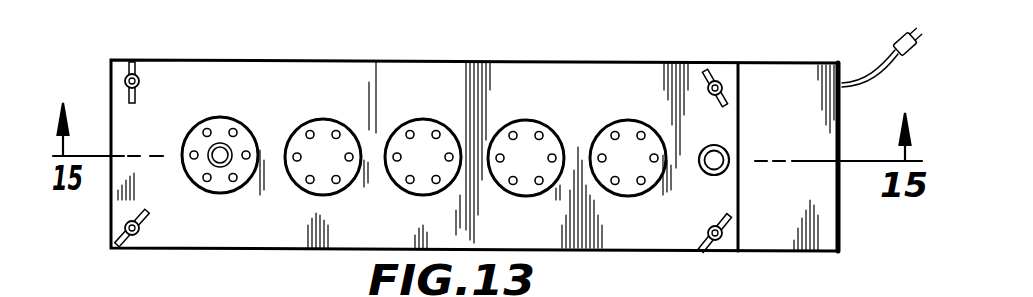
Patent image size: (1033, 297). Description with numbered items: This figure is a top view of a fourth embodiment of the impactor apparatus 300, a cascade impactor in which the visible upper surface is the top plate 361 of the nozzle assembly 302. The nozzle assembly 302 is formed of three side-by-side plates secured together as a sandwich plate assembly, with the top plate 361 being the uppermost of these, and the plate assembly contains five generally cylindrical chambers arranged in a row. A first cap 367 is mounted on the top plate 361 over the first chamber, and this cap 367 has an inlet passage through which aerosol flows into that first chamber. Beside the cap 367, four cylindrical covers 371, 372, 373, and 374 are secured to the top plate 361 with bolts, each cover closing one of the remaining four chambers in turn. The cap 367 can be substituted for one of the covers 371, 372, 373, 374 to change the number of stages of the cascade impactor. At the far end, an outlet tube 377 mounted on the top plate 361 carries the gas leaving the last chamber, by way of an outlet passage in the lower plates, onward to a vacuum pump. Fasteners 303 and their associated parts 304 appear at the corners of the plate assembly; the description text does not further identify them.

The control panel assembly 300 is at (590, 49).
The top plate 361 is at (474, 133).
The nozzle assembly 302 is at (153, 76).
The wing screw 303 is at (704, 70).
The wing of screw 304 is at (721, 87).
The first cap 367 is at (217, 128).
The cylindrical cover 371 is at (326, 128).
The cylindrical cover 372 is at (423, 128).
The cylindrical cover 373 is at (525, 128).
The cylindrical cover 374 is at (630, 128).
The outlet tube 377 is at (722, 170).